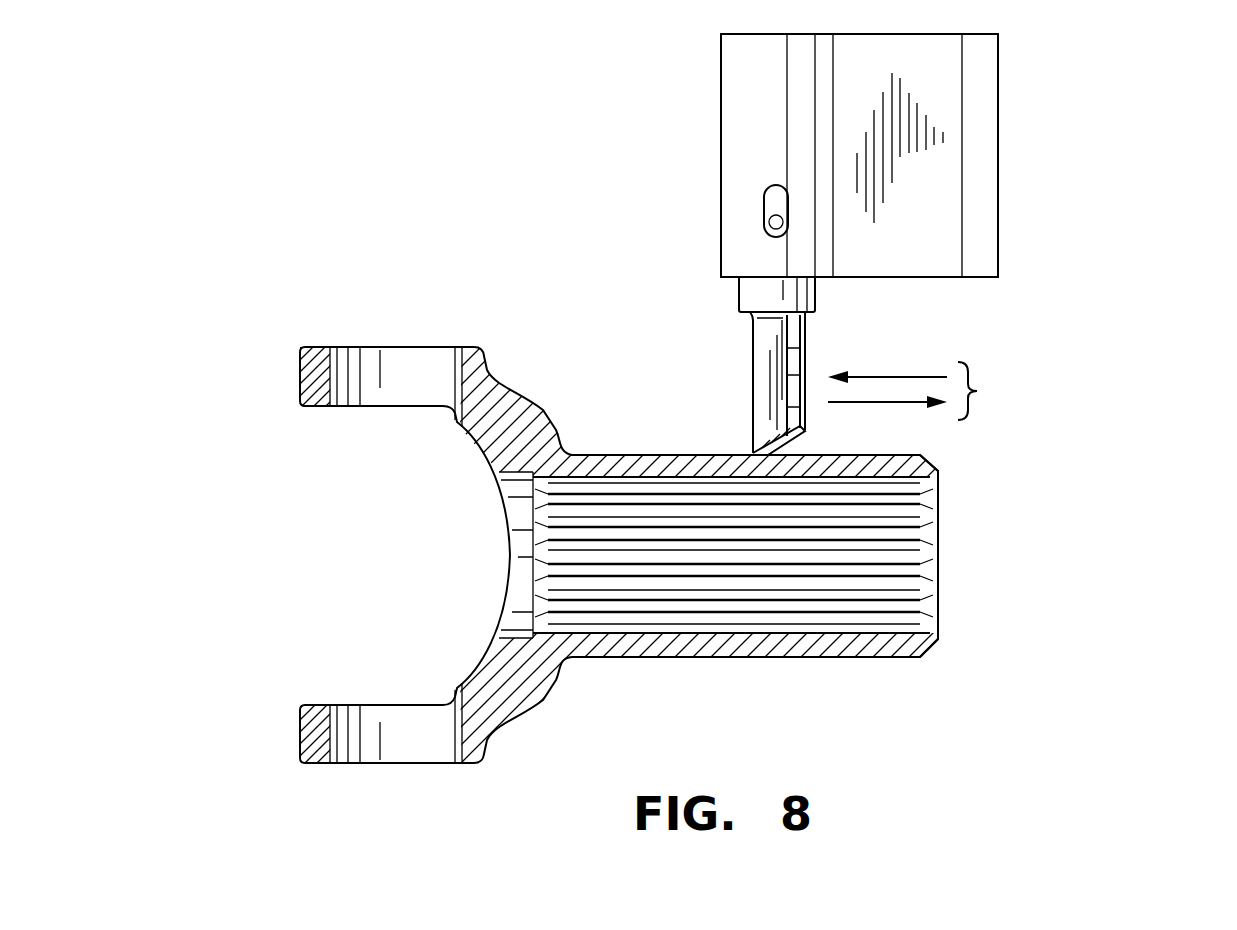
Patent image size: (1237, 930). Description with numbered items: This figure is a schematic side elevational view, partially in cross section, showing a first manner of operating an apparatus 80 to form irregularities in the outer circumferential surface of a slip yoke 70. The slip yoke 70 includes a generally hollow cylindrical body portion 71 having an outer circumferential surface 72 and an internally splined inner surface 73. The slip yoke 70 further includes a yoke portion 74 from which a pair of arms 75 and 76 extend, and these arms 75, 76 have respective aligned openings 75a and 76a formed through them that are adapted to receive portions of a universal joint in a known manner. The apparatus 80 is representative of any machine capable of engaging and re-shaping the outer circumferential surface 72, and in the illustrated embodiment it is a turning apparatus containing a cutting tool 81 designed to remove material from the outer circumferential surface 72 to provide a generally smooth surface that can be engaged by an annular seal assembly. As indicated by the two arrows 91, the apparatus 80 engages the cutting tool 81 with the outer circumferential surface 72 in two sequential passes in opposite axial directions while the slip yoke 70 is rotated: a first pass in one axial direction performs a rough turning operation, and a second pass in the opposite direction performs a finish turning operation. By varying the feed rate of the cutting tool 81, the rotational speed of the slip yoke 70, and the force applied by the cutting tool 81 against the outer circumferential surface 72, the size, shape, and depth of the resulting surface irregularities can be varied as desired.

The slip yoke 70 is at (550, 338).
The body portion 71 is at (940, 473).
The outer circumferential surface 72 is at (867, 657).
The internally splined inner surface 73 is at (883, 588).
The yoke portion 74 is at (485, 437).
The arm 75 is at (303, 386).
The opening 75a is at (336, 375).
The arm 76 is at (303, 740).
The opening 76a is at (337, 740).
The apparatus 80 is at (1092, 106).
The cutting tool 81 is at (763, 383).
The arrows 91 is at (923, 391).